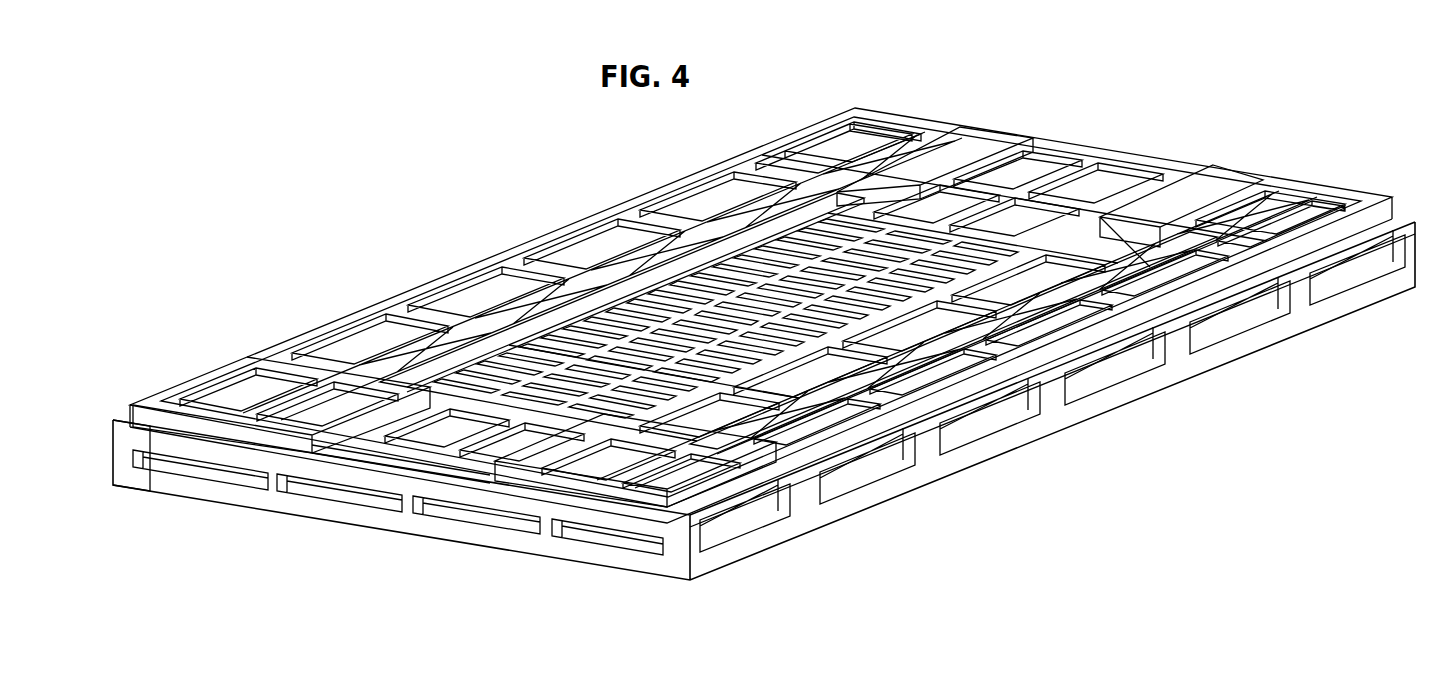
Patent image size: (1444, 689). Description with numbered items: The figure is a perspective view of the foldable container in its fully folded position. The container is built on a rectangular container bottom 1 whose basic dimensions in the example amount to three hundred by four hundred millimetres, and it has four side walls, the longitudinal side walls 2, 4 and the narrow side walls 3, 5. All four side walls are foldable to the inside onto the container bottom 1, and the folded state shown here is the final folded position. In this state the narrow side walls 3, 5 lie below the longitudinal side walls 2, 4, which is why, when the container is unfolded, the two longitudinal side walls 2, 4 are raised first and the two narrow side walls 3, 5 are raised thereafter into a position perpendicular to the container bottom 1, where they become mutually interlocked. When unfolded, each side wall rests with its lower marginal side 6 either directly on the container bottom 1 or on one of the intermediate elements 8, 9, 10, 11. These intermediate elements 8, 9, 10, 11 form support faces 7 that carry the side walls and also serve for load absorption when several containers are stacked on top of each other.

The container bottom 1 is at (652, 574).
The longitudinal side wall 2 is at (1280, 190).
The narrow side wall 3 is at (1075, 180).
The longitudinal side wall 4 is at (1005, 150).
The narrow side wall 5 is at (393, 445).
The lower marginal side 6 is at (1390, 205).
The support face 7 is at (1372, 232).
The intermediate element 8 is at (1135, 388).
The intermediate element 9 is at (1058, 160).
The intermediate element 10 is at (118, 447).
The intermediate element 11 is at (566, 545).